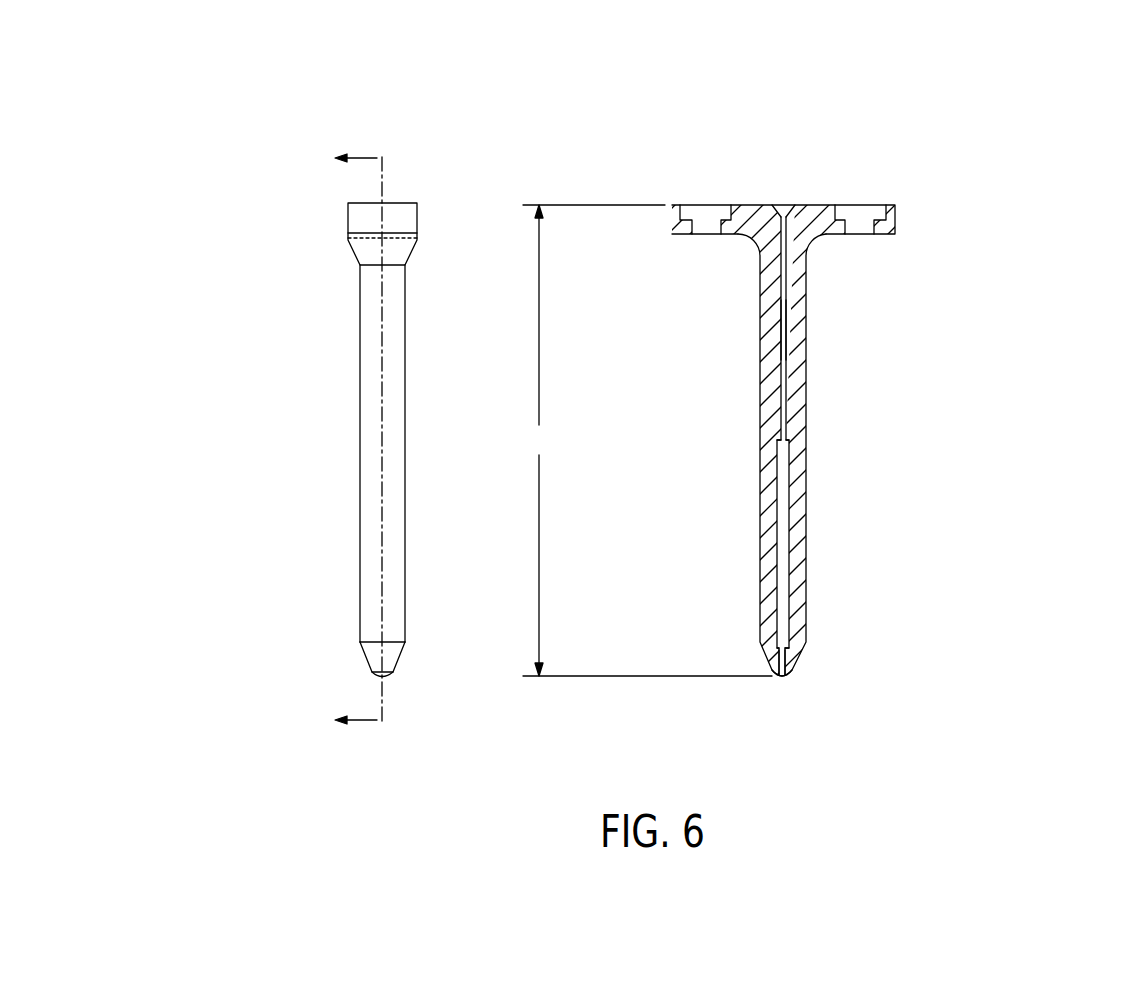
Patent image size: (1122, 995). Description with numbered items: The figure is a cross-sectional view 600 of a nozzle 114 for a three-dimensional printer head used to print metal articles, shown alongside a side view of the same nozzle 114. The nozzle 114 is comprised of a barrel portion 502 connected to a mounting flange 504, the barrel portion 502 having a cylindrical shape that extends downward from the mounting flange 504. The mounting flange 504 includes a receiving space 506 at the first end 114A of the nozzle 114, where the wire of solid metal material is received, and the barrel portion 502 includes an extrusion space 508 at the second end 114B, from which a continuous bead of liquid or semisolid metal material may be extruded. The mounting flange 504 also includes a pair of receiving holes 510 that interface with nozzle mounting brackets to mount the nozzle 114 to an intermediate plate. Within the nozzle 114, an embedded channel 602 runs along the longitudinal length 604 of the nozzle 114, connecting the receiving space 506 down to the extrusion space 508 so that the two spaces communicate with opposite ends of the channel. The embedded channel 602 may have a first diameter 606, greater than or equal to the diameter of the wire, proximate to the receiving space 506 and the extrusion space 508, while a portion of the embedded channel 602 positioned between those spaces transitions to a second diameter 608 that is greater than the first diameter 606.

The nozzle 114 is at (273, 190).
The first end 114A is at (895, 108).
The second end 114B is at (755, 713).
The barrel portion 502 is at (818, 287).
The mounting flange 504 is at (905, 216).
The receiving space 506 is at (785, 195).
The extrusion space 508 is at (800, 690).
The receiving holes 510 is at (713, 195).
The cross-sectional view 600 is at (1050, 140).
The embedded channel 602 is at (800, 380).
The longitudinal length 604 is at (647, 440).
The first diameter 606 is at (768, 326).
The second diameter 608 is at (768, 536).